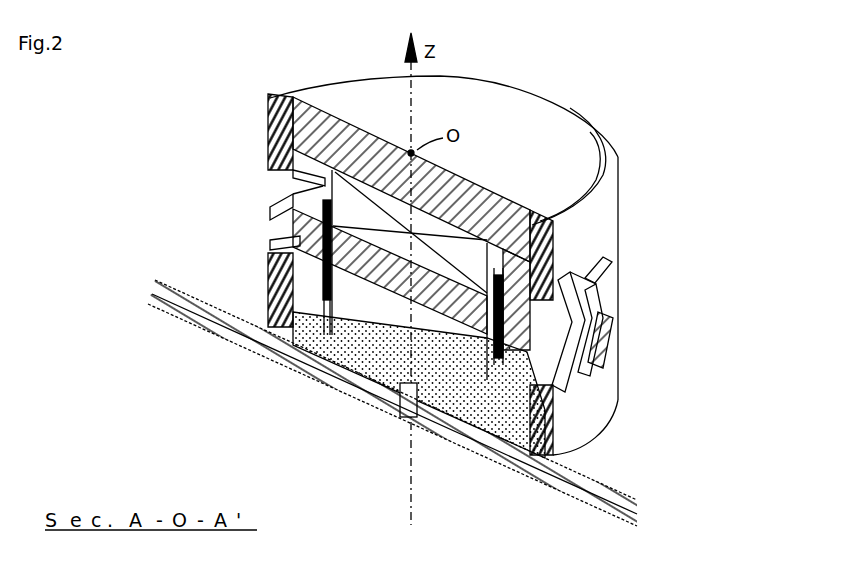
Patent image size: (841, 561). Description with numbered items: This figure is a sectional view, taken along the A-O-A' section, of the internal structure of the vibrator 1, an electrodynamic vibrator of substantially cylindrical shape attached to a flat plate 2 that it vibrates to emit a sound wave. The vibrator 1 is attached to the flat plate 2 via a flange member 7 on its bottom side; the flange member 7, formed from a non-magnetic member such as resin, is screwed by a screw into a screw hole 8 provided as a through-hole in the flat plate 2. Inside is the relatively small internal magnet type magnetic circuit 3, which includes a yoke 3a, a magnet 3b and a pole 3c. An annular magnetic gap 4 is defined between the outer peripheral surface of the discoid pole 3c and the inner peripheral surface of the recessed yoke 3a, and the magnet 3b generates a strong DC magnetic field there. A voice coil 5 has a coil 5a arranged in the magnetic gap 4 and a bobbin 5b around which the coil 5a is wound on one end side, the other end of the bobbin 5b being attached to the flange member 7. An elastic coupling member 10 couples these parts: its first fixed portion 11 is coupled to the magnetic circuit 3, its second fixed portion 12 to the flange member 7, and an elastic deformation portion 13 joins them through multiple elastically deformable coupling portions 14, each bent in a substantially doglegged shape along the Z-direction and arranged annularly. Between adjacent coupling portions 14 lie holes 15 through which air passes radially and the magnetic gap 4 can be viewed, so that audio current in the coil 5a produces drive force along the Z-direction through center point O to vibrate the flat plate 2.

The vibrator 1 is at (600, 95).
The flat plate 2 is at (612, 473).
The internal magnet type magnetic circuit 3 is at (233, 200).
The yoke 3a is at (288, 182).
The magnet 3b is at (322, 190).
The pole 3c is at (247, 245).
The magnetic gap 4 is at (320, 250).
The voice coil 5 is at (387, 377).
The coil 5a is at (322, 320).
The bobbin 5b is at (350, 296).
The flange member 7 is at (250, 347).
The screw hole 8 is at (410, 443).
The elastic coupling member 10 is at (675, 322).
The first fixed portion 11 is at (555, 241).
The second fixed portion 12 is at (560, 396).
The elastic deformation portion 13 is at (651, 320).
The coupling portion 14 is at (623, 392).
The hole 15 is at (610, 270).